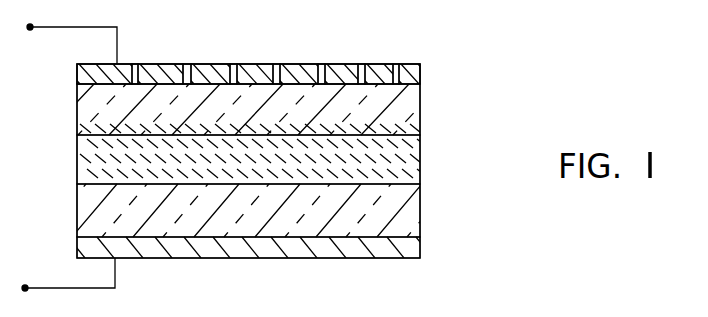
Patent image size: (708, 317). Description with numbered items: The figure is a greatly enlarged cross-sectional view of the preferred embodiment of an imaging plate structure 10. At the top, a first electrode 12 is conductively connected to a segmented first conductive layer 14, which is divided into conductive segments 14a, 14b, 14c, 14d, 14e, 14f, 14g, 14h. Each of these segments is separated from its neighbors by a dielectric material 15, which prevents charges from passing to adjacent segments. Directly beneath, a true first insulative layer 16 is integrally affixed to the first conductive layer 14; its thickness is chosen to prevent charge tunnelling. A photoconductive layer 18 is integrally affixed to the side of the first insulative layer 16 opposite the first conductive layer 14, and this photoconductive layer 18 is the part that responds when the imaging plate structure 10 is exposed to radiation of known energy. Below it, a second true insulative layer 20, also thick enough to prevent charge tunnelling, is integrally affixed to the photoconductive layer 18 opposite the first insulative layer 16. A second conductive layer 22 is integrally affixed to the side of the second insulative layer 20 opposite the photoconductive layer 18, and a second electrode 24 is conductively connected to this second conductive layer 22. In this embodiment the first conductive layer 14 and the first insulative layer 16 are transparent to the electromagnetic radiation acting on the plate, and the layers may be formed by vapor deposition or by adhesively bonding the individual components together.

The imaging plate structure 10 is at (443, 30).
The first electrode 12 is at (88, 27).
The first conductive layer 14 is at (255, 64).
The conductive segment 14a is at (95, 72).
The conductive segment 14b is at (150, 64).
The conductive segment 14c is at (193, 64).
The conductive segment 14d is at (238, 64).
The conductive segment 14e is at (295, 64).
The conductive segment 14f is at (347, 64).
The conductive segment 14g is at (380, 64).
The conductive segment 14h is at (416, 78).
The dielectric material 15 is at (128, 85).
The first insulative layer 16 is at (414, 122).
The photoconductive layer 18 is at (413, 171).
The second insulative layer 20 is at (412, 220).
The second conductive layer 22 is at (412, 240).
The second electrode 24 is at (115, 291).